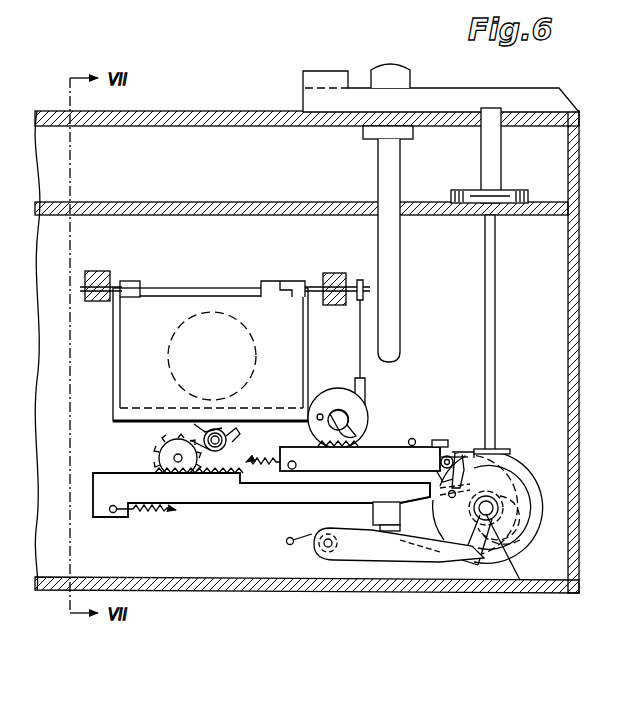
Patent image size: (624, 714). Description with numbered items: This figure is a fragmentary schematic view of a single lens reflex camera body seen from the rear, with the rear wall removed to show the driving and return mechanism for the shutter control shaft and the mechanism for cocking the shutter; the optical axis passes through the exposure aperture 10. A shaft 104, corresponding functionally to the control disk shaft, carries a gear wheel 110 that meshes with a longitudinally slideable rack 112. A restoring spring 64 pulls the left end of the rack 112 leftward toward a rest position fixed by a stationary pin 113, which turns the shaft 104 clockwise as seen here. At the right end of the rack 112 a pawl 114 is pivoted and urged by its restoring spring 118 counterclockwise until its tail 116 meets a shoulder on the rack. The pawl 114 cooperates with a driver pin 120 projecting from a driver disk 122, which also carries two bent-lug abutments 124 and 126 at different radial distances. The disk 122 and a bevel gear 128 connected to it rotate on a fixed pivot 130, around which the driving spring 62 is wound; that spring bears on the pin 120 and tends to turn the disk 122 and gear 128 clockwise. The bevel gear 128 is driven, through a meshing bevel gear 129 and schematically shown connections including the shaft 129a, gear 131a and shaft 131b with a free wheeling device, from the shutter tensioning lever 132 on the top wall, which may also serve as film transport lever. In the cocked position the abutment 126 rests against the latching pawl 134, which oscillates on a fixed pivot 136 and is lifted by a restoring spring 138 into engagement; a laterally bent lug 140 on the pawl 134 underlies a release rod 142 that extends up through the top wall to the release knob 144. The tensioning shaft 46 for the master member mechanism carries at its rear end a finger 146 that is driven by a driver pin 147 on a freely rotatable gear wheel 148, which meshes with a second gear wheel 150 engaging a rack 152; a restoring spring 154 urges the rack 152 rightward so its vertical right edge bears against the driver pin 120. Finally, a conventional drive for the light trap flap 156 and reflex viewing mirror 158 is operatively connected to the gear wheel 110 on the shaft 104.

The exposure aperture 10 is at (574, 190).
The tensioning shaft 46 is at (205, 442).
The driving spring 62 is at (536, 546).
The restoring spring 64 is at (266, 487).
The shaft 104 is at (338, 410).
The gear wheel 110 is at (366, 422).
The rack 112 is at (310, 476).
The stationary pin 113 is at (411, 438).
The pawl 114 is at (458, 455).
The tail 116 is at (440, 440).
The restoring spring 118 is at (448, 455).
The driver pin 120 is at (378, 504).
The driver disk 122 is at (512, 507).
The stop or abutment 124 is at (498, 452).
The stop or abutment 126 is at (486, 548).
The bevel gear 128 is at (536, 494).
The bevel gear 129 is at (512, 452).
The shaft 129a is at (494, 254).
The pivot 130 is at (492, 522).
The gear 131a is at (454, 190).
The shaft 131b is at (496, 164).
The shutter tensioning lever 132 is at (543, 101).
The latching pawl 134 is at (406, 548).
The fixed pivot 136 is at (330, 553).
The restoring spring 138 is at (304, 548).
The laterally bent lug 140 is at (395, 533).
The release rod 142 is at (398, 276).
The release knob or button 144 is at (392, 78).
The finger 146 is at (195, 432).
The driver pin 147 is at (236, 432).
The gear wheel 148 is at (227, 440).
The gear wheel 150 is at (166, 457).
The rack 152 is at (225, 488).
The restoring spring 154 is at (150, 516).
The light trap flap 156 is at (150, 300).
The reflex viewing mirror 158 is at (295, 287).